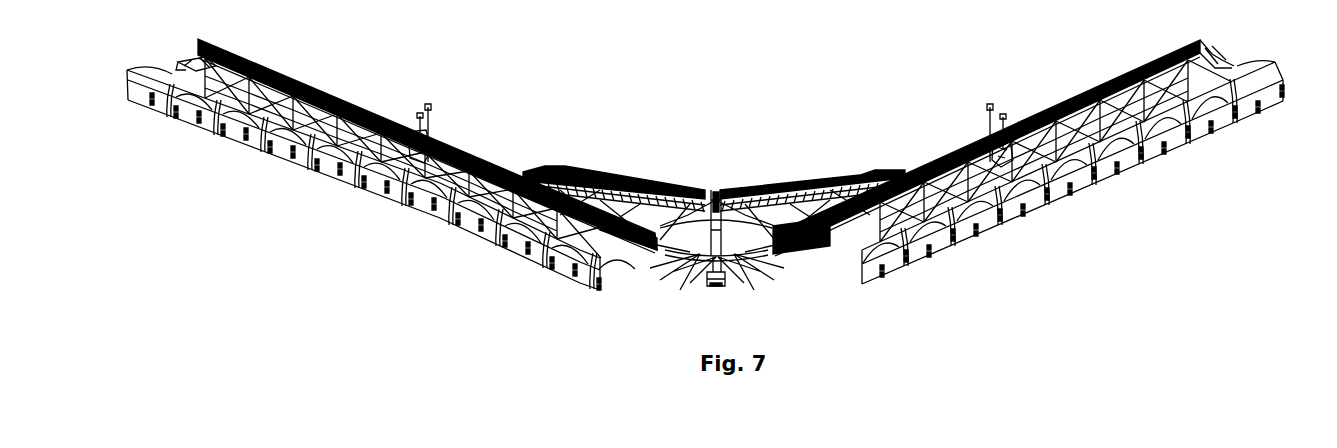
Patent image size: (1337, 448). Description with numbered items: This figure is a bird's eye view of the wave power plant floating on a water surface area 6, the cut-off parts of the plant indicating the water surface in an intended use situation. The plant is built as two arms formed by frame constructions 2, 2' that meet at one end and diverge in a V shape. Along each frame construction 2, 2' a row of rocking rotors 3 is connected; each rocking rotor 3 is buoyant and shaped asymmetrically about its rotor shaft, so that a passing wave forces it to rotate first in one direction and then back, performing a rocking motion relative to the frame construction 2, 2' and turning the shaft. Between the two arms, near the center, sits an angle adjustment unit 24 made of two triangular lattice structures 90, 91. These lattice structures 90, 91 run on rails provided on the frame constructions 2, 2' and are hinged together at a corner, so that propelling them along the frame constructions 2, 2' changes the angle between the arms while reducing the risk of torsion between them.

The frame construction 2 is at (416, 133).
The frame construction 2' is at (1015, 131).
The rocking rotor 3 is at (142, 95).
The angle adjustment unit 24 is at (779, 160).
The triangular lattice structure 90 is at (673, 250).
The triangular lattice structure 91 is at (757, 250).
The water surface area 6 is at (1264, 129).